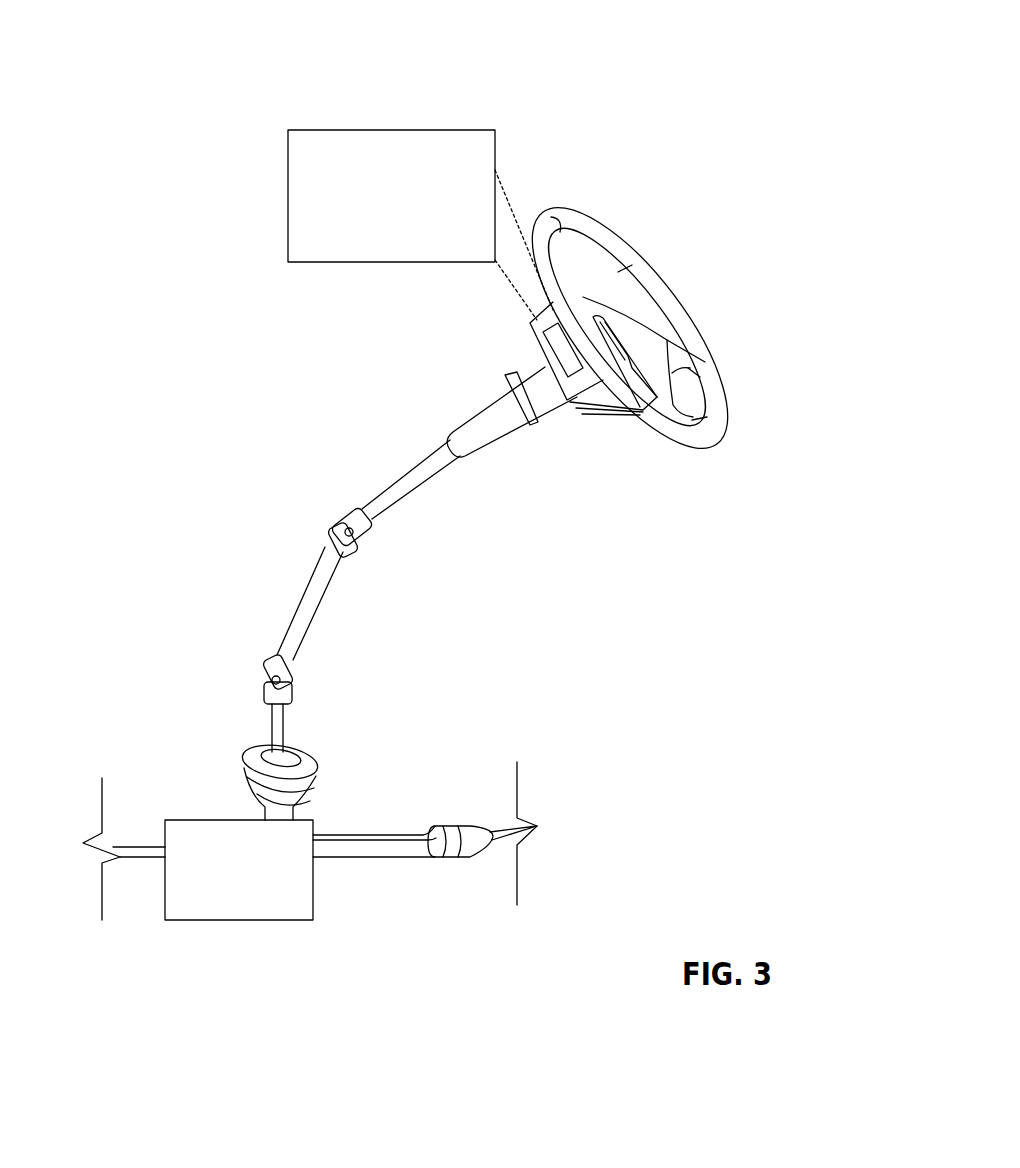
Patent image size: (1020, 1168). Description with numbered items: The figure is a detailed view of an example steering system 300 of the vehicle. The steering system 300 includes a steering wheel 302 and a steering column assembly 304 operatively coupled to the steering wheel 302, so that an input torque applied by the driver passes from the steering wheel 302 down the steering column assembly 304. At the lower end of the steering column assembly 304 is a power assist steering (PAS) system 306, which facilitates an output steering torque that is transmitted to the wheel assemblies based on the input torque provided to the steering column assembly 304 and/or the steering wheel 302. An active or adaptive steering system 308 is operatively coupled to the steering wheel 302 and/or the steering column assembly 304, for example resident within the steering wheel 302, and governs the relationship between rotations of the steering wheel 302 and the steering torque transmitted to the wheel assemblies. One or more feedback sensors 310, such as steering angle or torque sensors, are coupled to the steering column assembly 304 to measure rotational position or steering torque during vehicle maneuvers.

The steering system 300 is at (679, 66).
The steering wheel 302 is at (618, 246).
The steering column assembly 304 is at (358, 399).
The power assist steering (PAS) system 306 is at (260, 909).
The adaptive steering system 308 is at (410, 249).
The feedback sensor 310 is at (507, 376).